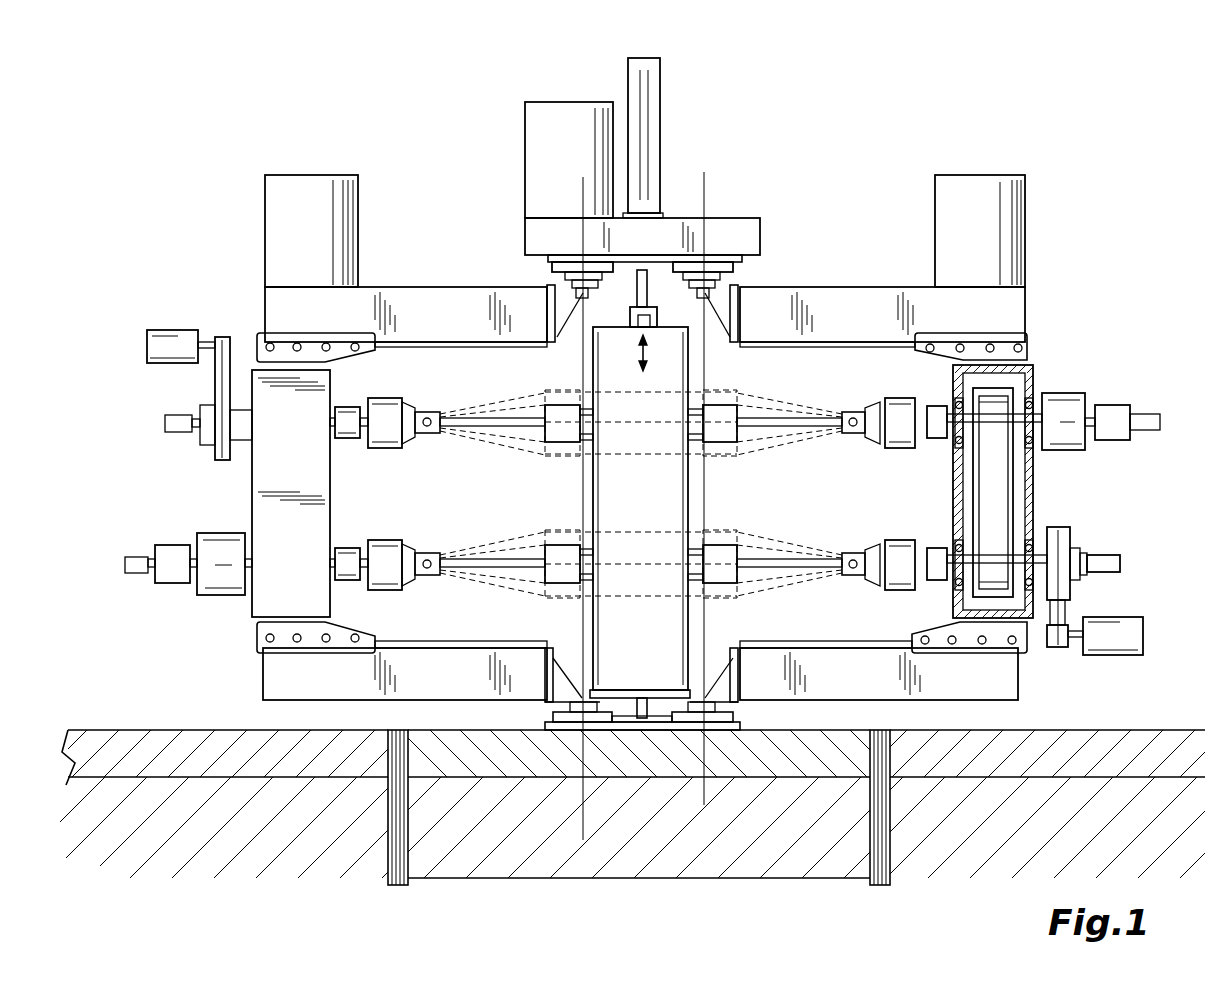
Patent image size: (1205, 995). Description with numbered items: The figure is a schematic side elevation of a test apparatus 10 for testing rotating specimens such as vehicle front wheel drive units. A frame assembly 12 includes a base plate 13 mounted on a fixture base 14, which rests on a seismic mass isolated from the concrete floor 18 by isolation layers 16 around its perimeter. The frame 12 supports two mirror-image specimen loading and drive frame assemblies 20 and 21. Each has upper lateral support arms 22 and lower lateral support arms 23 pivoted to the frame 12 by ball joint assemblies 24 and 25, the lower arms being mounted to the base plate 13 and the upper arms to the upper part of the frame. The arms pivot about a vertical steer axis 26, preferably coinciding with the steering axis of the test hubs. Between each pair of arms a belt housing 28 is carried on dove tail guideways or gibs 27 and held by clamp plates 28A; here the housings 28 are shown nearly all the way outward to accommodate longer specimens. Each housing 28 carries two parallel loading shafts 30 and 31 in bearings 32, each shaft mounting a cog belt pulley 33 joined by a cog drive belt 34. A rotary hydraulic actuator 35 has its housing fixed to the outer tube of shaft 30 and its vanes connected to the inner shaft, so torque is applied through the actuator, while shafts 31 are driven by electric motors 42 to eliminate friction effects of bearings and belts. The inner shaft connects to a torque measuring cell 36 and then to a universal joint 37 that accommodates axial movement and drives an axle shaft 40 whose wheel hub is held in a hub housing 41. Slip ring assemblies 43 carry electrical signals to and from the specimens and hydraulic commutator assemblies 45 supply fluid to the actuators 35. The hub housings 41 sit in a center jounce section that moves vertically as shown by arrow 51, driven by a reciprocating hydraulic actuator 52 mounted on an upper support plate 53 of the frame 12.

The test apparatus 10 is at (1030, 208).
The frame assembly 12 is at (690, 222).
The base plate 13 is at (545, 724).
The fixture base 14 is at (812, 742).
The isolation layers 16 is at (408, 796).
The concrete floor 18 is at (176, 740).
The specimen loading and drive frame assembly 20 is at (1035, 352).
The specimen loading and drive frame assembly 21 is at (245, 325).
The upper lateral support arms 22 is at (412, 292).
The lower lateral support arms 23 is at (345, 700).
The ball joint assembly 24 is at (552, 267).
The ball joint assembly 25 is at (641, 700).
The axis of pivoting 26 is at (707, 343).
The dove tail guideways or gibs 27 is at (772, 347).
The belt housing 28 is at (255, 487).
The clamp plate 28A is at (290, 330).
The loading shaft 30 is at (252, 563).
The loading shaft 31 is at (245, 440).
The bearings 32 is at (1035, 400).
The cog belt pulley 33 is at (1015, 440).
The cog drive belt 34 is at (995, 490).
The rotary hydraulic actuator 35 is at (222, 596).
The torque measuring cell 36 is at (387, 400).
The universal joint 37 is at (433, 412).
The axle shaft 40 is at (820, 430).
The hub housing 41 is at (723, 405).
The electric motor 42 is at (147, 336).
The slip ring assembly 43 is at (347, 440).
The hydraulic commutator assembly 45 is at (166, 585).
The arrow 51 is at (650, 352).
The reciprocating hydraulic actuator 52 is at (660, 140).
The upper support plate 53 is at (525, 232).